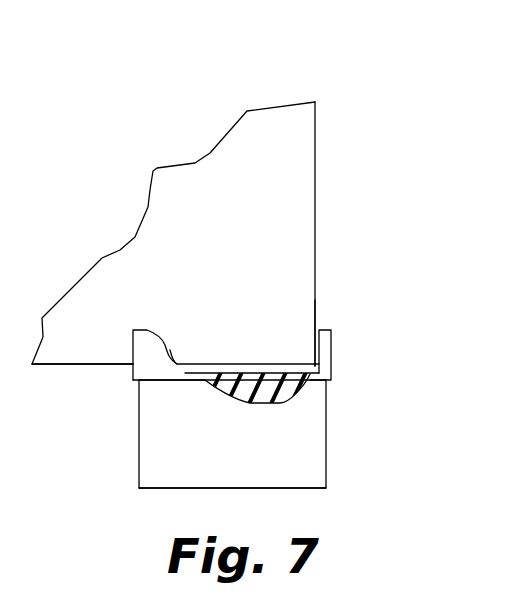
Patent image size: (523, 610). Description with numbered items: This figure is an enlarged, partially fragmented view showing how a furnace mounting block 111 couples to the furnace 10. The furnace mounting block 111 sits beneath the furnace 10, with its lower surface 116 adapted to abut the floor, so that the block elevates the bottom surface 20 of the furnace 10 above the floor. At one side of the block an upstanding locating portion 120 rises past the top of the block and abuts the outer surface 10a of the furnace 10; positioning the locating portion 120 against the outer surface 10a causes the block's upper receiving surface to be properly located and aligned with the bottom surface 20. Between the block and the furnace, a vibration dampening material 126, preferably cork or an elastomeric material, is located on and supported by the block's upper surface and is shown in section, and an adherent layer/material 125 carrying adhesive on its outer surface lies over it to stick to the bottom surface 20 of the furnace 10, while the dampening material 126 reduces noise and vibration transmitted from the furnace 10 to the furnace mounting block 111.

The furnace 10 is at (283, 153).
The bottom surface 20 is at (70, 365).
The adherent layer/material 125 is at (293, 368).
The outer surface 10a is at (305, 330).
The locating portion 120 is at (333, 352).
The vibration dampening material 126 is at (333, 370).
The furnace mounting block 111 is at (313, 432).
The surface 116 is at (163, 488).